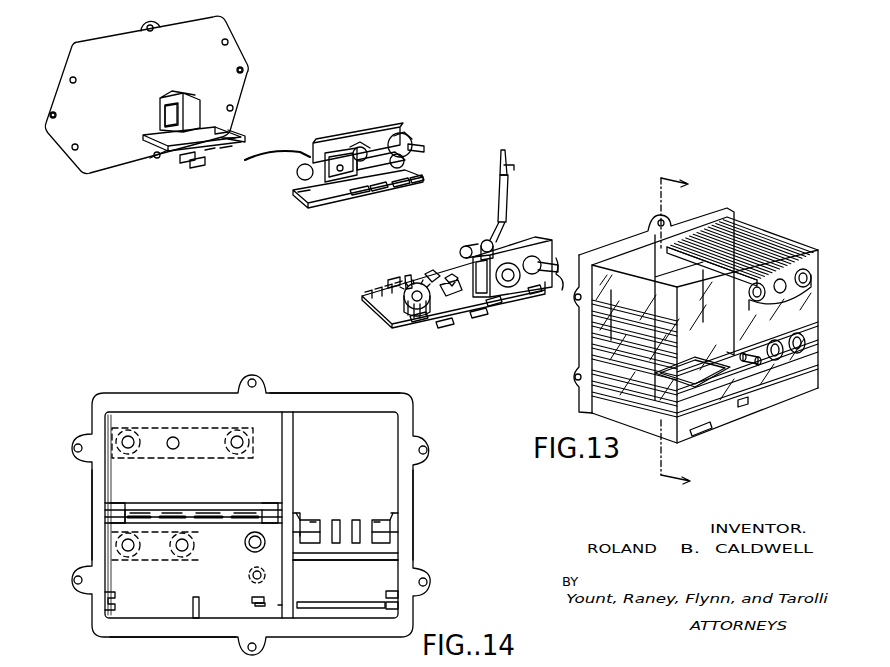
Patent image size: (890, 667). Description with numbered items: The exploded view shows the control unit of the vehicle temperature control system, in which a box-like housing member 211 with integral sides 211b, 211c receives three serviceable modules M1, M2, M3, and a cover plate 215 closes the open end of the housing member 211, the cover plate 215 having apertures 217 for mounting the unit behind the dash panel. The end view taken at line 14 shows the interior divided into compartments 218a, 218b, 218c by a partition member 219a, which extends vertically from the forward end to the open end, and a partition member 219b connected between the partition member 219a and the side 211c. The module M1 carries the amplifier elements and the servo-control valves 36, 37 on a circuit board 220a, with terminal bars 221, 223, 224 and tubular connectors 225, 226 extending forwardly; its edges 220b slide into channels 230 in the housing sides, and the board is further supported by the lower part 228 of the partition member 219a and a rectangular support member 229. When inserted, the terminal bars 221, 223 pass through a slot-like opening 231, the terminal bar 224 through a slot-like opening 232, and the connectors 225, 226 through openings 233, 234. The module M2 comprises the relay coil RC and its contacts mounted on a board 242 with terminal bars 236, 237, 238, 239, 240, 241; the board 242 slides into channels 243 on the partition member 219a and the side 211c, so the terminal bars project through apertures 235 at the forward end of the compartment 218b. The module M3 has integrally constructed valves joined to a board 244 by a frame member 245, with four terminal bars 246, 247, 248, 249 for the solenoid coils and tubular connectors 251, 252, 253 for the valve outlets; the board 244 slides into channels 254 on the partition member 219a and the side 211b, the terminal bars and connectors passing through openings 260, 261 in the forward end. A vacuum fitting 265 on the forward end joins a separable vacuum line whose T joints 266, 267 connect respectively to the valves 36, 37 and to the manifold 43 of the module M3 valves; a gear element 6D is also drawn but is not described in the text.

In FIG. 13, the cover plate 215 is at (60, 141).
In FIG. 13, the apertures 217 is at (245, 71).
In FIG. 13, the module M2 is at (163, 94).
In FIG. 13, the relay coil RC is at (163, 112).
In FIG. 13, the circuit board 242 is at (162, 150).
In FIG. 13, the terminal bar 236 is at (185, 162).
In FIG. 13, the terminal bar 237 is at (196, 170).
In FIG. 13, the terminal bar 238 is at (210, 150).
In FIG. 13, the terminal bar 239 is at (225, 152).
In FIG. 13, the terminal bar 240 is at (222, 137).
In FIG. 13, the terminal bar 241 is at (230, 141).
In FIG. 13, the module M3 is at (305, 127).
In FIG. 13, the tubular connector 253 is at (366, 146).
In FIG. 13, the frame member 245 is at (404, 136).
In FIG. 13, the tubular connector 251 is at (426, 149).
In FIG. 13, the tubular connector 252 is at (404, 163).
In FIG. 13, the board 244 is at (300, 195).
In FIG. 13, the terminal bar 246 is at (358, 193).
In FIG. 13, the terminal bar 247 is at (378, 190).
In FIG. 13, the terminal bar 248 is at (406, 192).
In FIG. 13, the terminal bar 249 is at (416, 188).
In FIG. 13, the manifold 43 is at (506, 200).
In FIG. 13, the T joint 267 is at (506, 157).
In FIG. 13, the module M1 is at (381, 306).
In FIG. 13, the servo-control valve 37 is at (517, 243).
In FIG. 13, the servo-control valve 36 is at (488, 242).
In FIG. 13, the T joint 266 is at (463, 248).
In FIG. 13, the tubular connector 226 is at (562, 256).
In FIG. 13, the drive gear 6D is at (405, 279).
In FIG. 13, the circuit board 220a is at (395, 283).
In FIG. 13, the edges 220b is at (408, 323).
In FIG. 13, the tubular connector 225 is at (540, 292).
In FIG. 13, the terminal bar 224 is at (496, 306).
In FIG. 13, the terminal bar 223 is at (482, 318).
In FIG. 13, the terminal bar 221 is at (446, 330).
In FIG. 13, the line 14— 14 is at (686, 334).
In FIG. 13, the openings 261 is at (816, 289).
In FIG. 14, the openings 261 is at (237, 448).
In FIG. 13, the opening 234 is at (806, 346).
In FIG. 14, the opening 234 is at (130, 551).
In FIG. 13, the opening 233 is at (800, 372).
In FIG. 14, the opening 233 is at (190, 546).
In FIG. 13, the vacuum fitting 265 is at (772, 378).
In FIG. 13, the slot-like opening 232 is at (746, 408).
In FIG. 14, the slot-like opening 232 is at (255, 596).
In FIG. 13, the slot-like opening 231 is at (705, 430).
In FIG. 14, the slot-like opening 231 is at (330, 602).
In FIG. 14, the housing member 211 is at (200, 394).
In FIG. 14, the side 211b is at (336, 393).
In FIG. 14, the side 211c is at (92, 490).
In FIG. 14, the partition member 219a is at (300, 431).
In FIG. 14, the partition member 219b is at (377, 558).
In FIG. 14, the compartment 218a is at (238, 476).
In FIG. 14, the compartment 218b is at (332, 470).
In FIG. 14, the compartment 218c is at (322, 583).
In FIG. 14, the channels 254 is at (118, 502).
In FIG. 14, the openings 260 is at (240, 512).
In FIG. 14, the channels 230 is at (112, 594).
In FIG. 14, the rectangular support member 229 is at (192, 607).
In FIG. 14, the lower part 228 is at (276, 612).
In FIG. 14, the channels 243 is at (393, 515).
In FIG. 14, the apertures 235 is at (377, 520).